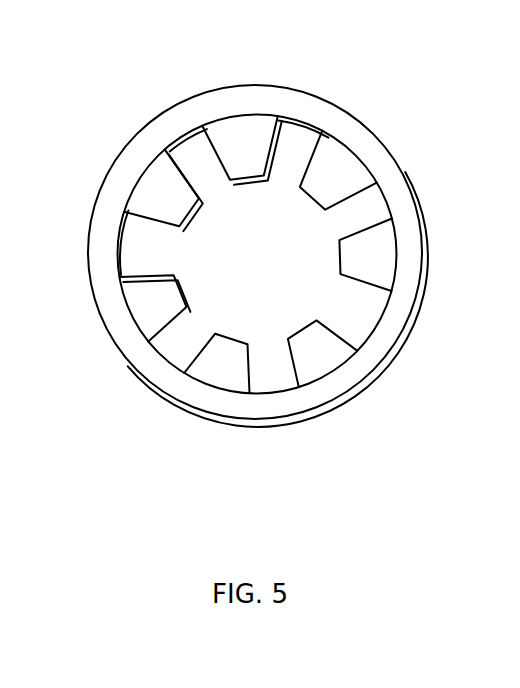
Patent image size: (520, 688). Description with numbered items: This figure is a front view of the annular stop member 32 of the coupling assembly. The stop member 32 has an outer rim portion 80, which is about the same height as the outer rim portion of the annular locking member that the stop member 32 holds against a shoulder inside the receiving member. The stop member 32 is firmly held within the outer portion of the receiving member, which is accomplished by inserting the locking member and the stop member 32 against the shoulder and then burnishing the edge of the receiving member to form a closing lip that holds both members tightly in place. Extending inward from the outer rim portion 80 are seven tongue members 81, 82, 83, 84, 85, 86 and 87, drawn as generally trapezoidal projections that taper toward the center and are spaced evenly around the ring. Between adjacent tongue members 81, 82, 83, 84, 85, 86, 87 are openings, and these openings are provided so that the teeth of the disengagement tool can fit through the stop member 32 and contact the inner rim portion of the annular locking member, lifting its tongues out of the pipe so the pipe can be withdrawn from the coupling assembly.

The annular stop member 32 is at (432, 180).
The outer rim portion 80 is at (413, 247).
The tab 81 is at (240, 157).
The tab 82 is at (333, 177).
The tab 83 is at (372, 262).
The tab 84 is at (322, 357).
The tab 85 is at (217, 372).
The tab 86 is at (157, 300).
The tab 87 is at (160, 190).